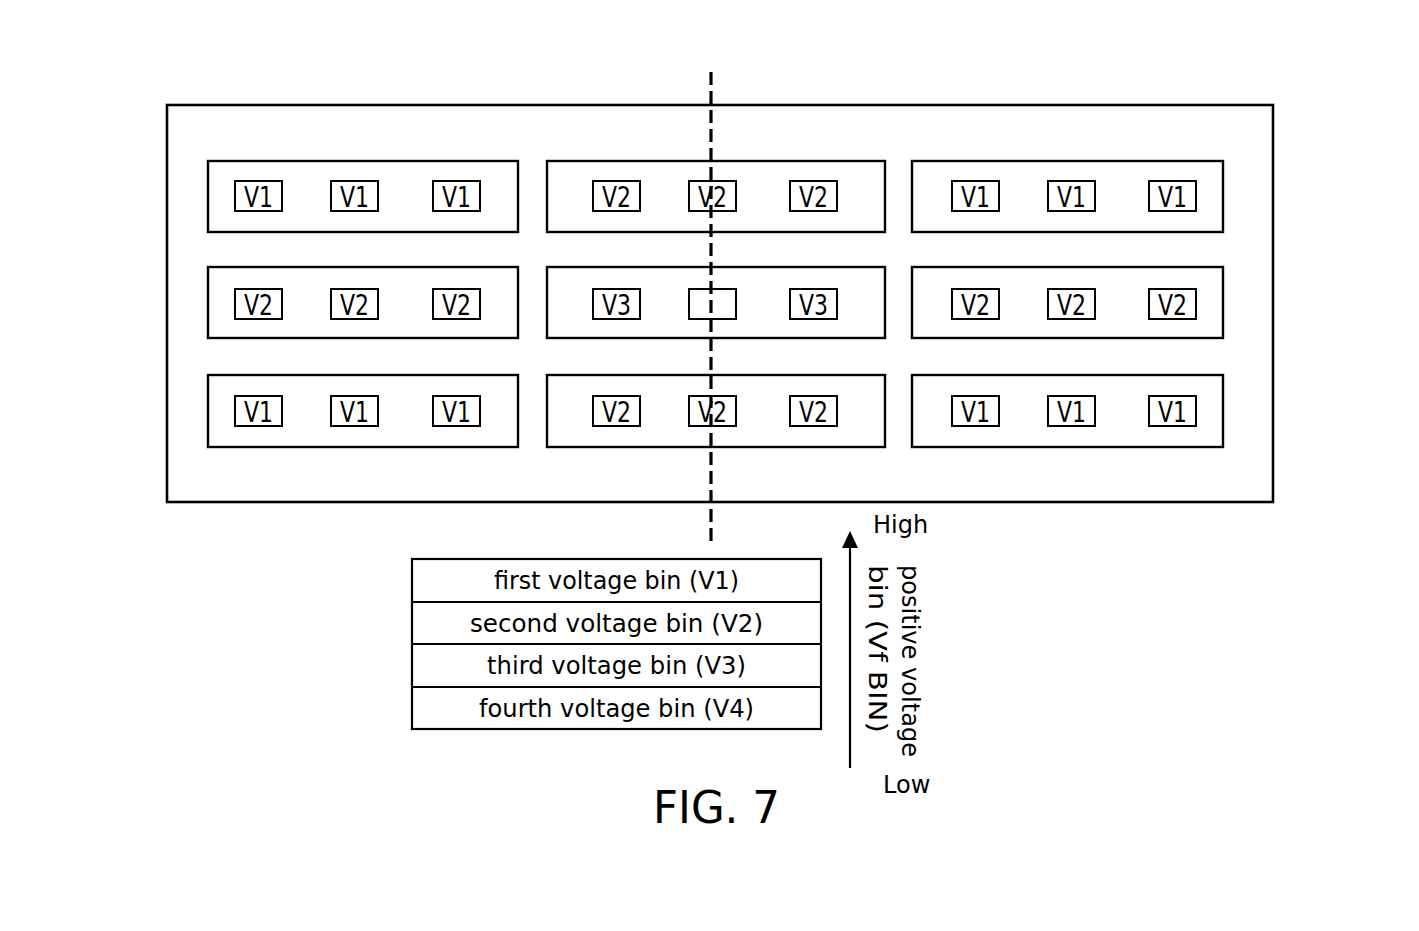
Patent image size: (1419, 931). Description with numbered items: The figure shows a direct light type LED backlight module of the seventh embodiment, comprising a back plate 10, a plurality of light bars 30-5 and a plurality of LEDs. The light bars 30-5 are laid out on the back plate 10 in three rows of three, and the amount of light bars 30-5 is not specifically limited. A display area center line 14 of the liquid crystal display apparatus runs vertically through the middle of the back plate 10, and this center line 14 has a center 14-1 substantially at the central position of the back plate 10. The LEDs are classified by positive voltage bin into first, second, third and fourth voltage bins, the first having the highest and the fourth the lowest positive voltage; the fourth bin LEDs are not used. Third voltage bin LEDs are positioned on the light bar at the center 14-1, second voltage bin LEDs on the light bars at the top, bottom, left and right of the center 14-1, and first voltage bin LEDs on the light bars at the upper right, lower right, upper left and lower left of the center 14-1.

The back plate 10 is at (720, 303).
The display area center line 14 is at (710, 292).
The center 14-1 is at (715, 288).
The light bar 30-5 is at (1223, 199).